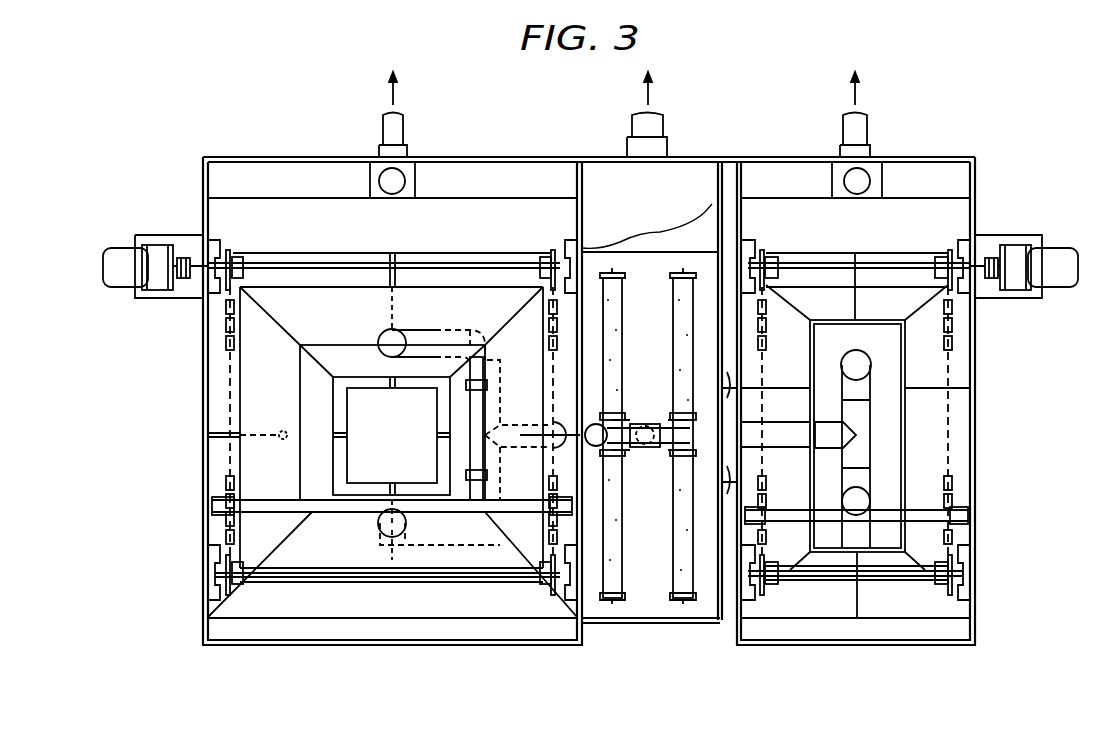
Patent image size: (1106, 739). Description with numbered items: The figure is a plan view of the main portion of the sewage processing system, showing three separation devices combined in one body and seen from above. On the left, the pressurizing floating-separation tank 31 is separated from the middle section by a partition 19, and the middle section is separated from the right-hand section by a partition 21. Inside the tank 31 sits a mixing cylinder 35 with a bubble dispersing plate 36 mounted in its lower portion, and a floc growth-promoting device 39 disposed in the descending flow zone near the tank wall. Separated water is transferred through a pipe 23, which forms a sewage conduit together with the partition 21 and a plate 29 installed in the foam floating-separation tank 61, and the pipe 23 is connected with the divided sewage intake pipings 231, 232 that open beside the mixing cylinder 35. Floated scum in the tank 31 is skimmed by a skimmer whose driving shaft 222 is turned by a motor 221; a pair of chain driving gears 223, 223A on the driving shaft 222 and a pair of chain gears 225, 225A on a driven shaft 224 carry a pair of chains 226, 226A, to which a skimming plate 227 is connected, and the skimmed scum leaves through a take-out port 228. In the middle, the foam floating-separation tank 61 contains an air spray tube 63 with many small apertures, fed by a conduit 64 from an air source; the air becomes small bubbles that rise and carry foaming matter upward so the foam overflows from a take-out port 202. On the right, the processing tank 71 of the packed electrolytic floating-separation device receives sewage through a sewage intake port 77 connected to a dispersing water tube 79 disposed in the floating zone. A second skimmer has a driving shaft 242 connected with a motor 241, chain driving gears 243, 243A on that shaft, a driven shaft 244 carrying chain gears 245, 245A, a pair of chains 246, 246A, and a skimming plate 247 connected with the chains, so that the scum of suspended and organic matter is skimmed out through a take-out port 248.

The partition 19 is at (582, 598).
The partition 21 is at (740, 598).
The pipe 23 is at (600, 432).
The plate 29 is at (718, 600).
The pressurizing floating-separation tank 31 is at (206, 336).
The mixing cylinder 35 is at (345, 392).
The bubble dispersing plate 36 is at (360, 461).
The floc growth-promoting device 39 is at (242, 384).
The foam floating-separation tank 61 is at (648, 623).
The air spray tube 63 is at (622, 526).
The conduit 64 is at (636, 448).
The processing tank 71 is at (978, 330).
The sewage intake port 77 is at (728, 418).
The dispersing water tube 79 is at (866, 421).
The take-out port 202 is at (667, 150).
The motor 221 is at (126, 250).
The driving shaft 222 is at (280, 264).
The chain driving gear 223 is at (229, 256).
The chain driving gear 223A is at (553, 256).
The driven shaft 224 is at (276, 583).
The chain gear 225 is at (222, 592).
The chain gear 225A is at (551, 583).
The chain 226 is at (226, 486).
The chain 226A is at (548, 522).
The skimming plate 227 is at (216, 512).
The take-out port 228 is at (405, 128).
The sewage intake piping 231 is at (478, 374).
The sewage intake piping 232 is at (470, 462).
The motor 241 is at (1060, 250).
The driving shaft 242 is at (812, 264).
The chain driving gear 243 is at (766, 256).
The chain driving gear 243A is at (948, 256).
The driven shaft 244 is at (870, 582).
The chain gear 245 is at (770, 585).
The chain gear 245A is at (945, 585).
The chain 246 is at (966, 516).
The chain 246A is at (768, 528).
The skimming plate 247 is at (966, 526).
The take-out port 248 is at (868, 130).